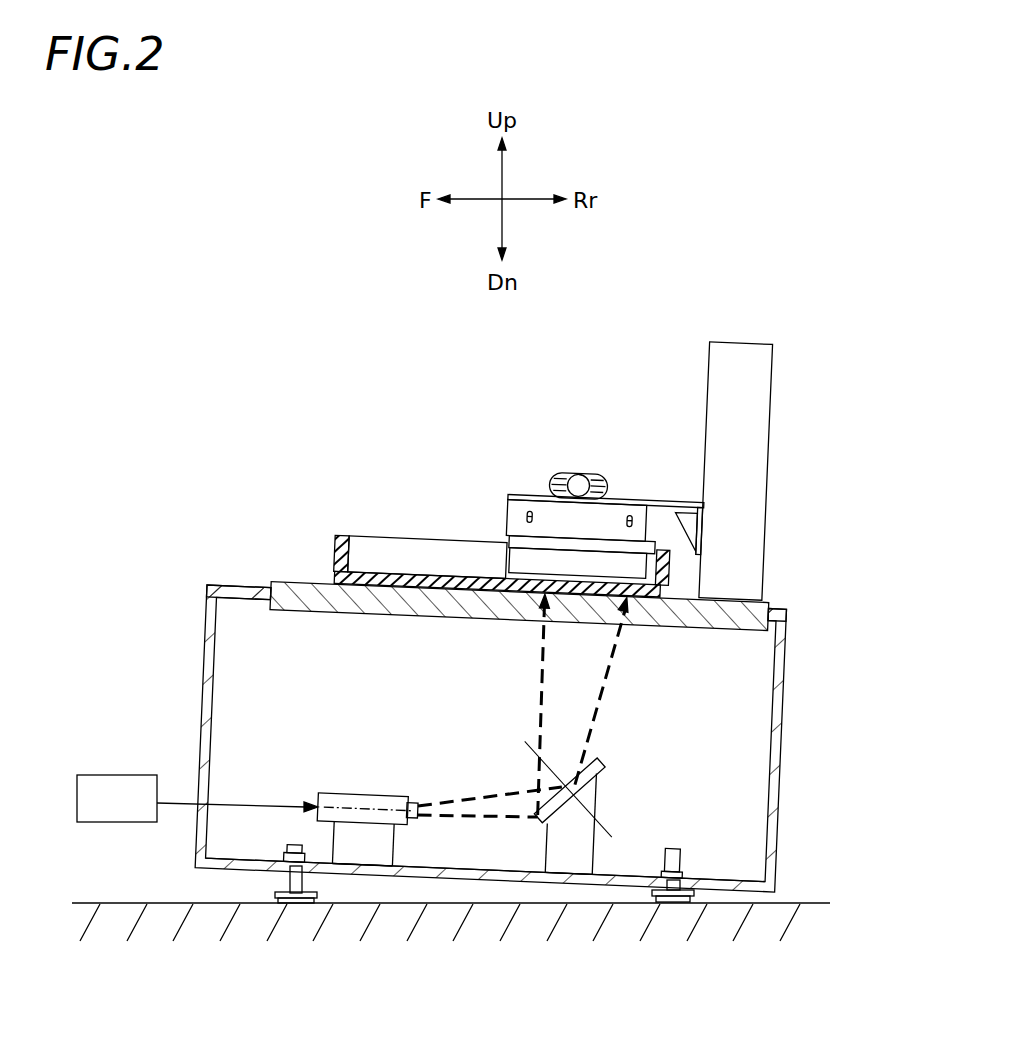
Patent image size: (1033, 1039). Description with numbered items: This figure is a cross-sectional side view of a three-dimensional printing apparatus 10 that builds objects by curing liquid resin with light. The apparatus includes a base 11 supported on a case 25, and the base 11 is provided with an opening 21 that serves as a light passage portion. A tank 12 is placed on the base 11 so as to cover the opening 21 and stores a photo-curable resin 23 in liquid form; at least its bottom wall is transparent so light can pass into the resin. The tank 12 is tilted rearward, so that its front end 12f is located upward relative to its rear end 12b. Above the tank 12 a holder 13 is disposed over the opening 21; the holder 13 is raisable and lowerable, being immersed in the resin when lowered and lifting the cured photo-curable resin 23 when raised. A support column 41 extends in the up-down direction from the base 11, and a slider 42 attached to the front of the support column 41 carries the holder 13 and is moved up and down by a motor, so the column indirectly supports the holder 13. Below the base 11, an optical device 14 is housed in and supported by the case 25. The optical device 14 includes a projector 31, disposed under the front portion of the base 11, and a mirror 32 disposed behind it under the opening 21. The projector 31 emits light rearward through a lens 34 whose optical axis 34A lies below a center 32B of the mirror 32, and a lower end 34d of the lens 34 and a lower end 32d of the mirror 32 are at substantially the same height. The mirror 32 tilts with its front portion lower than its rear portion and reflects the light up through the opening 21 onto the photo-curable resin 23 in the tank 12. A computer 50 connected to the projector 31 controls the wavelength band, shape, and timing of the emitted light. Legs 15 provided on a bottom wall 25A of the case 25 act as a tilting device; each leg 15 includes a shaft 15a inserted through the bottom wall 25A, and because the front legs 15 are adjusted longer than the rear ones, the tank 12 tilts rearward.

The three-dimensional printing apparatus 10 is at (298, 349).
The base 11 is at (298, 576).
The tank 12 is at (566, 530).
The front end 12f is at (335, 574).
The rear end 12b is at (690, 590).
The holder 13 is at (498, 506).
The optical device 14 is at (377, 843).
The legs 15 is at (282, 905).
The shaft 15a is at (288, 853).
The opening 21 is at (515, 615).
The photo-curable resin 23 is at (457, 572).
The case 25 is at (786, 750).
The bottom wall 25A is at (332, 870).
The projector 31 is at (318, 795).
The mirror 32 is at (598, 818).
The center 32B is at (570, 868).
The lower end 32d is at (545, 872).
The lens 34 is at (376, 866).
The optical axis 34A is at (364, 862).
The lower end 34d is at (412, 860).
The support column 41 is at (768, 470).
The slider 42 is at (632, 503).
The computer 50 is at (108, 775).